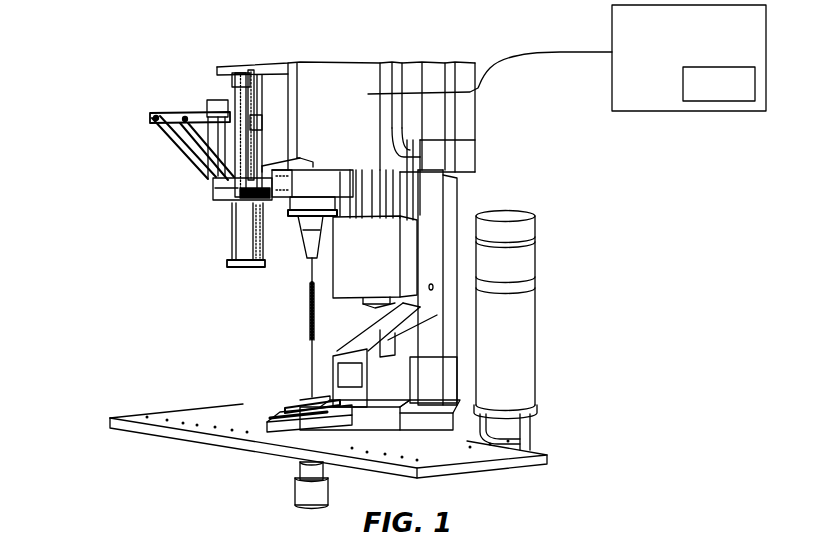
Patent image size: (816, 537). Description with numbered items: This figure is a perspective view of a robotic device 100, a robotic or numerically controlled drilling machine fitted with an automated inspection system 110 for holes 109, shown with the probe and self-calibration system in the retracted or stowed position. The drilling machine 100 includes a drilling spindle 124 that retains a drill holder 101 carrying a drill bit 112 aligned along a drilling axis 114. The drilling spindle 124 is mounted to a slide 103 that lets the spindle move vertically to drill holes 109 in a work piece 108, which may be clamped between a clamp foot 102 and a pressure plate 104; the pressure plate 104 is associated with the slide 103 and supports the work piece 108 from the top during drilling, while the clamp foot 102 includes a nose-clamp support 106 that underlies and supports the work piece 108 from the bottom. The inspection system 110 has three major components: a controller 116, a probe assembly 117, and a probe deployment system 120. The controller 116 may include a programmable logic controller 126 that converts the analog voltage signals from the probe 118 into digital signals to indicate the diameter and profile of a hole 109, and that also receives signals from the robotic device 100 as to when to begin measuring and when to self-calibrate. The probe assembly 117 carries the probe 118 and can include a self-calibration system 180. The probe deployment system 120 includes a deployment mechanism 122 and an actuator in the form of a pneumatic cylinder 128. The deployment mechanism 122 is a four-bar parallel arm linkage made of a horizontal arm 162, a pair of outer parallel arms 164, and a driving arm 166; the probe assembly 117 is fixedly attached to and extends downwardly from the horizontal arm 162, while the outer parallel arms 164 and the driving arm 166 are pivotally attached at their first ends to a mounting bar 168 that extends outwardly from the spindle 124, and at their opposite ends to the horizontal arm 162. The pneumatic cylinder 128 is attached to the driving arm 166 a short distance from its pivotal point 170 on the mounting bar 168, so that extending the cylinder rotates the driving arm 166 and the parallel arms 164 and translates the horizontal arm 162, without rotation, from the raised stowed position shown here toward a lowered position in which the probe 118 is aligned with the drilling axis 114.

The robotic device 100 is at (382, 52).
The drill holder 101 is at (305, 232).
The clamp foot 102 is at (300, 490).
The slide 103 is at (397, 193).
The pressure plate 104 is at (267, 422).
The nose-clamp support 106 is at (297, 473).
The work piece 108 is at (453, 456).
The holes 109 is at (183, 422).
The automated inspection system 110 is at (112, 58).
The drill bit 112 is at (308, 312).
The drilling axis 114 is at (310, 384).
The controller 116 is at (655, 95).
The probe assembly 117 is at (275, 228).
The probe 118 is at (247, 238).
The probe deployment system 120 is at (148, 83).
The deployment mechanism 122 is at (128, 113).
The drilling spindle 124 is at (360, 130).
The programmable logic controller 126 is at (743, 94).
The pneumatic cylinder 128 is at (236, 92).
The horizontal arm 162 is at (177, 114).
The outer parallel arms 164 is at (202, 160).
The driving arm 166 is at (204, 118).
The mounting bar 168 is at (230, 200).
The pivotal point 170 is at (262, 166).
The self-calibration system 180 is at (234, 270).